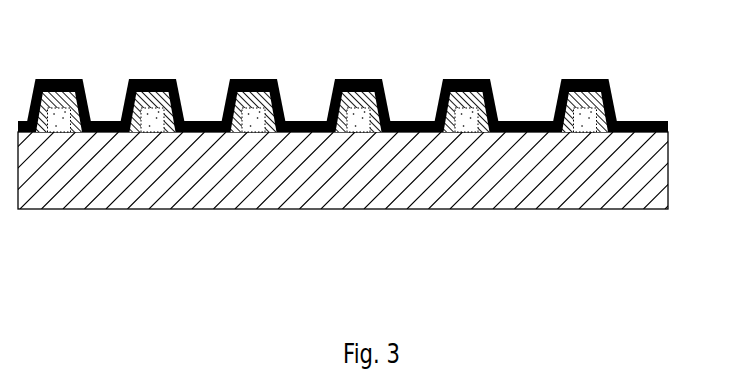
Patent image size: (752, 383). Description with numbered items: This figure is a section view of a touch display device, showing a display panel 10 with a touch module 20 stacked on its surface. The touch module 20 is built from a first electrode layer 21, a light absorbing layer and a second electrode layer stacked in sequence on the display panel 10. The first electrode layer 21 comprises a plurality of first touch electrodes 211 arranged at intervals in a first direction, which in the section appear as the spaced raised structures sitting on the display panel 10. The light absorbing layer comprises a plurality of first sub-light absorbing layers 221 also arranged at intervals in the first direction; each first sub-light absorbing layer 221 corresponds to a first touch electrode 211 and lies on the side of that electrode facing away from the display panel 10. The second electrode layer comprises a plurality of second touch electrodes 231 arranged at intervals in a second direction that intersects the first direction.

The display panel 10 is at (230, 195).
The touch module 20 is at (370, 71).
The first electrode layer 21 is at (470, 79).
The first touch electrode 211 is at (360, 80).
The first sub-light absorbing layer 221 is at (578, 79).
The second touch electrode 231 is at (252, 80).